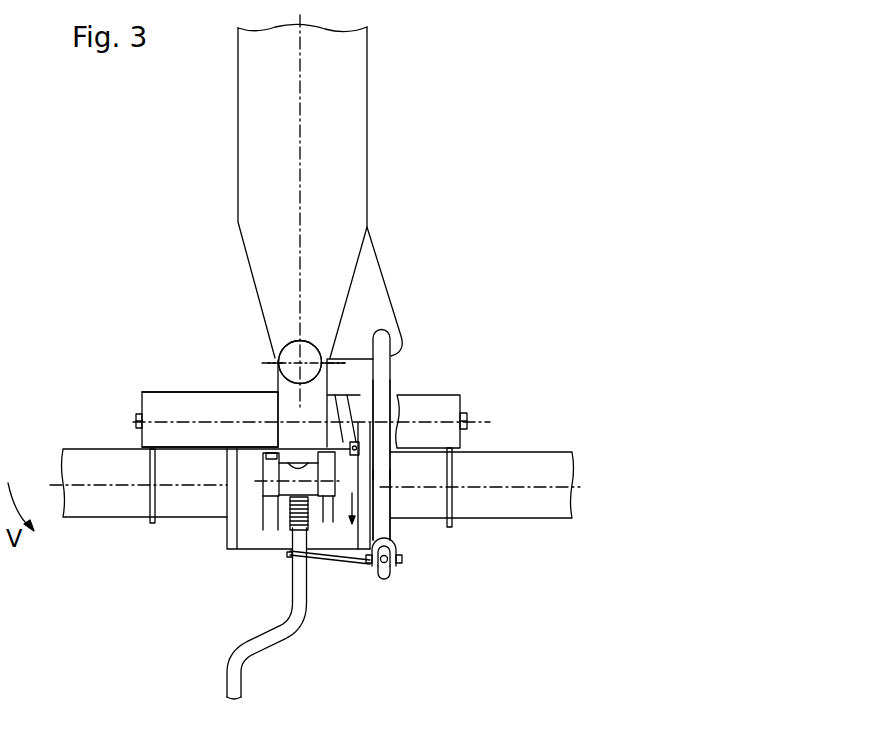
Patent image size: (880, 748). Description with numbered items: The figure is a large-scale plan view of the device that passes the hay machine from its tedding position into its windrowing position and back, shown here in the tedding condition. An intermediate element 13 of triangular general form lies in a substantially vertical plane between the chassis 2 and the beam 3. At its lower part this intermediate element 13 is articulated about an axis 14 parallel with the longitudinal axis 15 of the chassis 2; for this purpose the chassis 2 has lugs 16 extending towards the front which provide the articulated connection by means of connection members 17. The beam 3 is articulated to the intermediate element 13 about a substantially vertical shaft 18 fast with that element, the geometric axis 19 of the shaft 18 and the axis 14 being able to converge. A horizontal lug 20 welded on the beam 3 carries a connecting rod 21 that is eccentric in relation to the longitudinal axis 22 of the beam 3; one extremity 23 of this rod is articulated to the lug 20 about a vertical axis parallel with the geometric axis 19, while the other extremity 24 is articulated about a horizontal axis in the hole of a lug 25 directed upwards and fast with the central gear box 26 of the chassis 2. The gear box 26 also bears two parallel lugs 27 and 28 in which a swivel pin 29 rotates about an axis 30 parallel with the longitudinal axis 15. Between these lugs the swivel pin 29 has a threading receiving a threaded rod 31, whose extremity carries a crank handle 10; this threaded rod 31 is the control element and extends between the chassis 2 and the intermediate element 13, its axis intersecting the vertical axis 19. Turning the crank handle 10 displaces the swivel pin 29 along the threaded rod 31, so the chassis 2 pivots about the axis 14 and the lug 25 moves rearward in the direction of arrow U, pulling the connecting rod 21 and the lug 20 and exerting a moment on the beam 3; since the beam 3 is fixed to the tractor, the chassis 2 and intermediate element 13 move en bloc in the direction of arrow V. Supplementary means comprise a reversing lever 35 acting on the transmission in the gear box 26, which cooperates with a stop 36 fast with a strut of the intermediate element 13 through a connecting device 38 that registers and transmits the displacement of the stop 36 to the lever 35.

The chassis 2 is at (543, 460).
The beam 3 is at (360, 127).
The crank handle 10 is at (298, 607).
The intermediate element 13 is at (190, 402).
The axis 14 is at (205, 420).
The longitudinal axis of the chassis 15 is at (117, 485).
The lugs 16 is at (150, 520).
The connection members 17 is at (137, 418).
The shaft 18 is at (291, 355).
The geometric axis of the shaft 19 is at (302, 360).
The lug 20 is at (367, 258).
The connecting rod 21 is at (385, 375).
The longitudinal axis of the beam 22 is at (300, 132).
The extremity of the connecting rod 23 is at (383, 328).
The other extremity of the connecting rod 24 is at (325, 407).
The lug 25 is at (363, 477).
The central gear box 26 is at (248, 532).
The lug 27 is at (334, 523).
The lug 28 is at (272, 458).
The swivel pin 29 is at (265, 470).
The axis 30 is at (297, 481).
The threaded rod 31 is at (287, 513).
The reversing lever 35 is at (328, 556).
The stop 36 is at (383, 507).
The device 38 is at (395, 573).